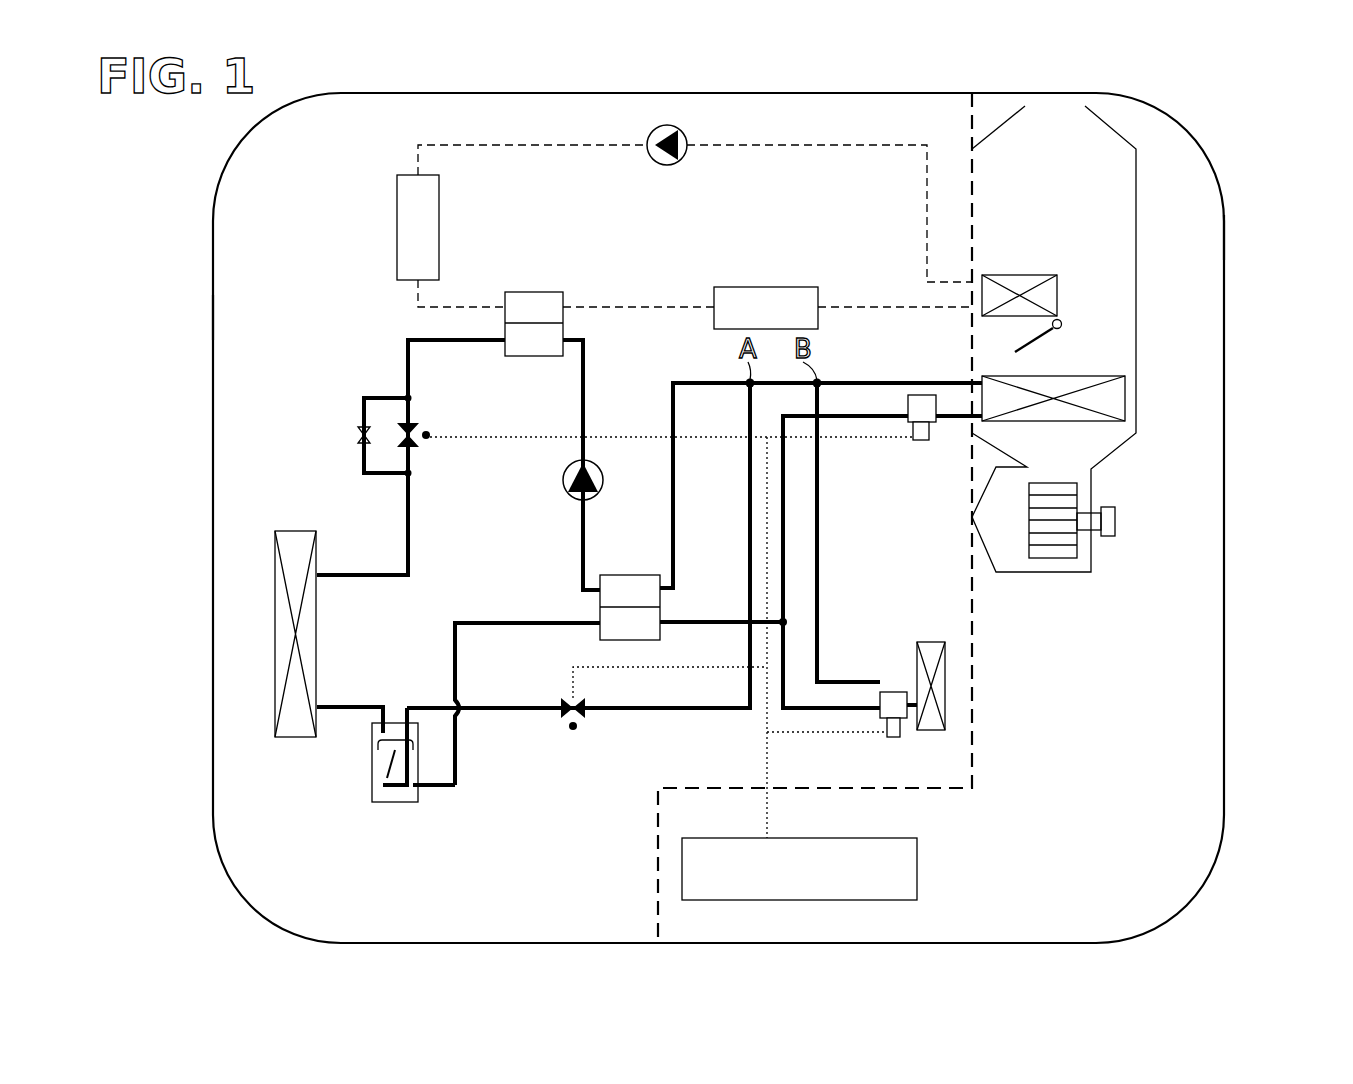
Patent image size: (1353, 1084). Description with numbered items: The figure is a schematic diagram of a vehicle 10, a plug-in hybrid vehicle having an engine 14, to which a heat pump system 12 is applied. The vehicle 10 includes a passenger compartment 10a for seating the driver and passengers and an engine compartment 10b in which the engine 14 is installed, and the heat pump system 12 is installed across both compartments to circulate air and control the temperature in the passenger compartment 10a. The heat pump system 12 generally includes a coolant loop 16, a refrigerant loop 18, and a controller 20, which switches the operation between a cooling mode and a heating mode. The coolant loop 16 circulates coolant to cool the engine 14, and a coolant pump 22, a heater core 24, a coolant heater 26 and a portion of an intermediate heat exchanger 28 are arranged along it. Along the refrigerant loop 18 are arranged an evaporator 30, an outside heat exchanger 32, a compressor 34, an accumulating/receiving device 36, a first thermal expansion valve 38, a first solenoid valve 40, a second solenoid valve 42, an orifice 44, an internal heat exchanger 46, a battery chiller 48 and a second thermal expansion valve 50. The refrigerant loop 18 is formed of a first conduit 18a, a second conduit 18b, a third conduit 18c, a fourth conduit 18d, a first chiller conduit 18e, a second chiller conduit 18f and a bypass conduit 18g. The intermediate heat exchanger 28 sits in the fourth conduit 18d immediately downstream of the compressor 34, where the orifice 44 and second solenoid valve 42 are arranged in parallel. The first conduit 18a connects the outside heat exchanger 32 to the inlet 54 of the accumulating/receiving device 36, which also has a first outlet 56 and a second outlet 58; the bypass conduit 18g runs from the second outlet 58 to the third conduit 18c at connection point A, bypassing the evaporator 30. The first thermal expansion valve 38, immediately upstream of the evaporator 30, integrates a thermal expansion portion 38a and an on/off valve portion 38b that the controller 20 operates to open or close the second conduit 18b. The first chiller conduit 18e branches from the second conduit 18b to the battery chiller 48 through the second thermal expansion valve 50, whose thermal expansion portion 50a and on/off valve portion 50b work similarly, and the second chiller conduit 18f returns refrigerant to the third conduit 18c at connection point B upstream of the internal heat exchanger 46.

The vehicle 10 is at (1200, 152).
The passenger compartment 10a is at (1187, 248).
The engine compartment 10b is at (250, 315).
The heat pump system 12 is at (782, 119).
The engine 14 is at (440, 206).
The coolant loop 16 is at (503, 143).
The refrigerant loop 18 is at (505, 718).
The first conduit 18a is at (351, 706).
The second conduit 18b is at (522, 622).
The third conduit 18c is at (705, 381).
The fourth conduit 18d is at (407, 365).
The first chiller conduit 18e is at (803, 712).
The second chiller conduit 18f is at (850, 681).
The bypass conduit 18g is at (630, 718).
The controller 20 is at (893, 838).
The coolant pump 22 is at (683, 134).
The heater core 24 is at (1036, 275).
The coolant heater 26 is at (797, 287).
The intermediate heat exchanger 28 is at (540, 292).
The evaporator 30 is at (1125, 399).
The outside heat exchanger 32 is at (274, 592).
The compressor 34 is at (563, 492).
The accumulating/receiving device 36 is at (399, 802).
The first thermal expansion valve 38 is at (923, 394).
The thermal expansion portion 38a is at (908, 400).
The on/off valve portion 38b is at (923, 440).
The first solenoid valve 40 is at (573, 730).
The second solenoid valve 42 is at (428, 431).
The orifice 44 is at (357, 436).
The internal heat exchanger 46 is at (660, 612).
The battery chiller 48 is at (930, 642).
The second thermal expansion valve 50 is at (895, 692).
The thermal expansion portion 50a is at (900, 713).
The on/off valve portion 50b is at (897, 737).
The inlet 54 is at (375, 718).
The first outlet 56 is at (435, 790).
The second outlet 58 is at (398, 707).